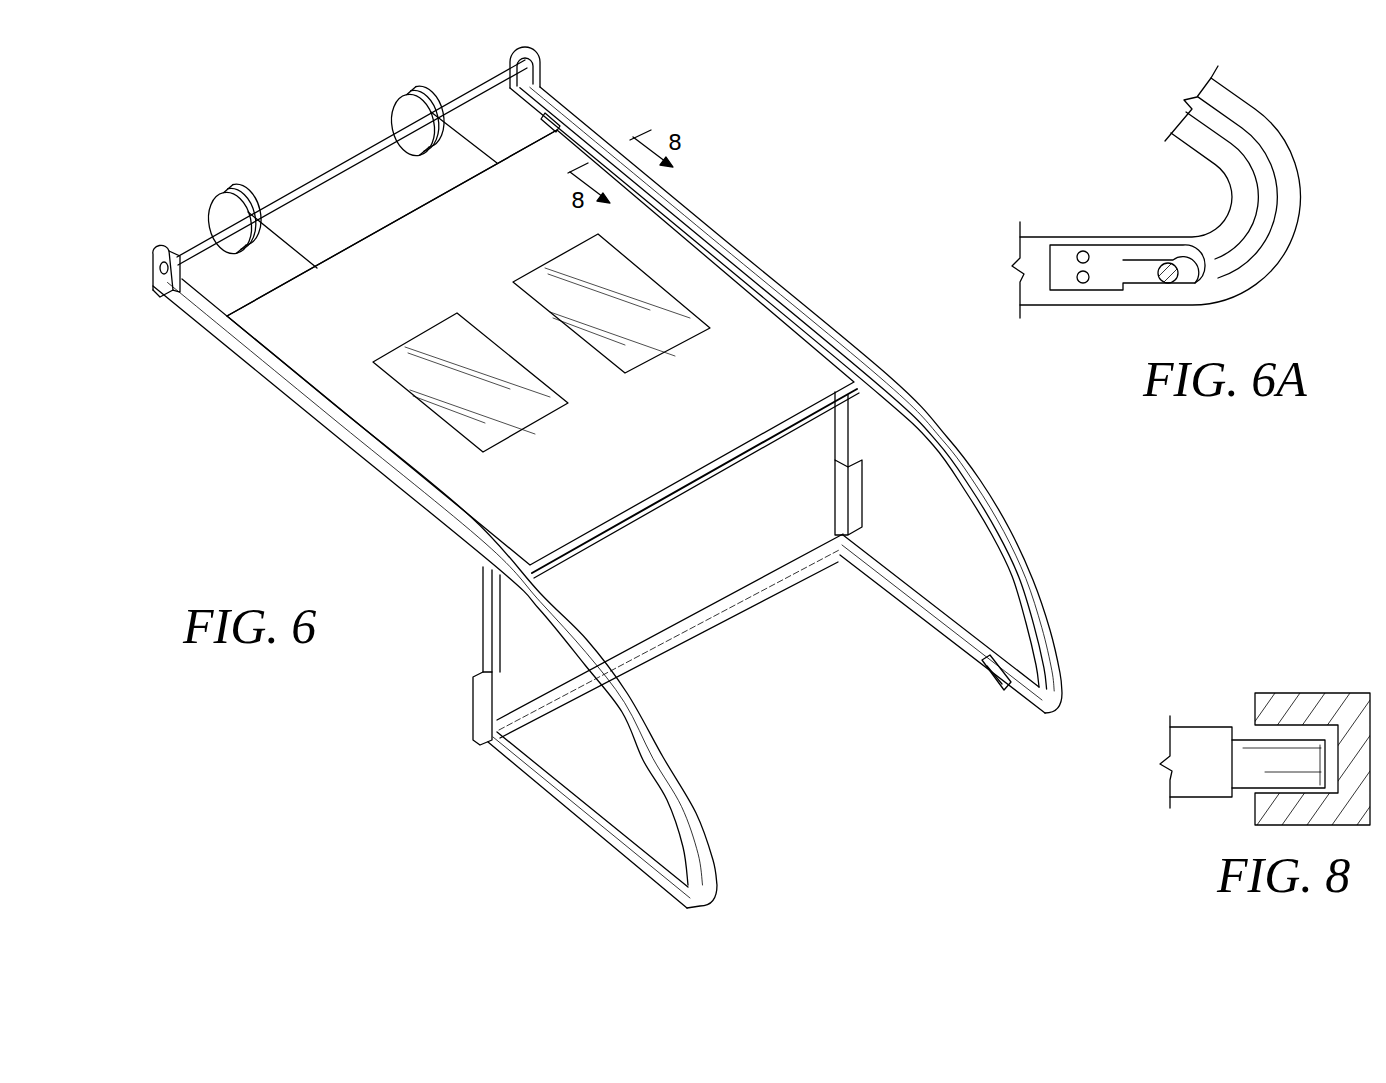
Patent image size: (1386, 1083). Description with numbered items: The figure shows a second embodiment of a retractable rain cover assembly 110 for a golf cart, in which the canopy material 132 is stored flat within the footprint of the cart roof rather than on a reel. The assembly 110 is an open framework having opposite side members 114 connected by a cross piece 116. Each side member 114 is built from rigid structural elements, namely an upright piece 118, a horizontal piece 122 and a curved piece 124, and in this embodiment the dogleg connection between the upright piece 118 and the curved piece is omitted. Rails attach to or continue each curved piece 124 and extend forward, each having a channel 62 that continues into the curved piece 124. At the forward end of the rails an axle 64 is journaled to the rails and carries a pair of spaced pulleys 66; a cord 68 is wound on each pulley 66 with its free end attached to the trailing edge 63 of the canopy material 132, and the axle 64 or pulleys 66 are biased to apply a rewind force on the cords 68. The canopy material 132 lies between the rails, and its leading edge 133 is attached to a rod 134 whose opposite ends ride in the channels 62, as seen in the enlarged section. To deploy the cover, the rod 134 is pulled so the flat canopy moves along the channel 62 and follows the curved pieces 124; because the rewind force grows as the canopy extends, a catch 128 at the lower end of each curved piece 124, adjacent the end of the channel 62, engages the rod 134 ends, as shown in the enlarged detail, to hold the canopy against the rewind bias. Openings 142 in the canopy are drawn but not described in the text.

In FIG. 6, the retractable rain cover assembly 110 is at (813, 215).
In FIG. 6, the curved piece 124 is at (1012, 543).
In FIG. 6A, the curved piece 124 is at (1280, 143).
In FIG. 8, the curved piece 124 is at (1317, 692).
In FIG. 6, the side member 114 is at (977, 470).
In FIG. 6, the channel 62 is at (942, 463).
In FIG. 6A, the channel 62 is at (1262, 225).
In FIG. 8, the channel 62 is at (1267, 732).
In FIG. 6, the canopy material 132 is at (430, 266).
In FIG. 6, the trailing edge 63 is at (430, 200).
In FIG. 6, the leading edge 133 is at (677, 487).
In FIG. 6, the rod 134 is at (680, 492).
In FIG. 6A, the rod 134 is at (1168, 262).
In FIG. 8, the rod 134 is at (1250, 770).
In FIG. 6, the axle 64 is at (330, 168).
In FIG. 6, the pulley 66 is at (397, 108).
In FIG. 6, the cord 68 is at (297, 243).
In FIG. 6, the window opening 142 is at (680, 330).
In FIG. 6, the upright piece 118 is at (483, 618).
In FIG. 6, the cross piece 116 is at (727, 600).
In FIG. 6, the horizontal piece 122 is at (907, 613).
In FIG. 6, the catch 128 is at (990, 680).
In FIG. 6A, the catch 128 is at (1103, 280).